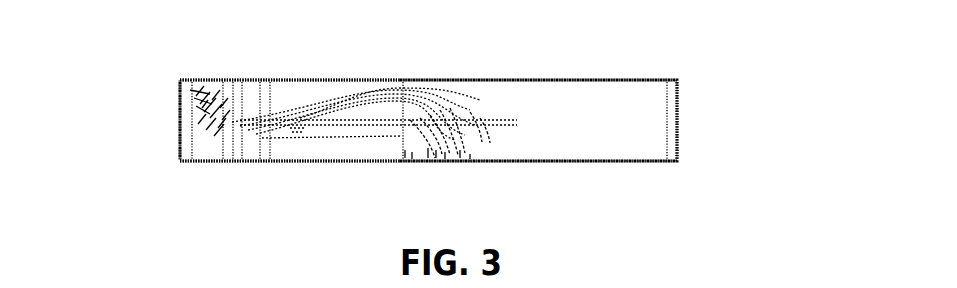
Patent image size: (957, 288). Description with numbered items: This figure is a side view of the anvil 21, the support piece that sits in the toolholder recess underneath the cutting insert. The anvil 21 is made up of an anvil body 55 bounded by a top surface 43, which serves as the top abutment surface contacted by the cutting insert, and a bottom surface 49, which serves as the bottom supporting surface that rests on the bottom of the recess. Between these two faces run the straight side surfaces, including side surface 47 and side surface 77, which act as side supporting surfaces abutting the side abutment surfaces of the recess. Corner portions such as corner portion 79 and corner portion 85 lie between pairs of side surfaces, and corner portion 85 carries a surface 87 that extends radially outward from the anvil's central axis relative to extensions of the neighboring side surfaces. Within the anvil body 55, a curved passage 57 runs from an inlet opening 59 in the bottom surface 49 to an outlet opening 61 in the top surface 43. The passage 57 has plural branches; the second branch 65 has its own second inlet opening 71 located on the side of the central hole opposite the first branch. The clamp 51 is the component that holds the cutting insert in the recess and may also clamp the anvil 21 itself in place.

The anvil 21 is at (735, 51).
The top surface 43 is at (630, 79).
The side surface 47 is at (570, 117).
The bottom surface 49 is at (607, 162).
The clamp 51 is at (498, 112).
The anvil body 55 is at (633, 138).
The curved passage 57 is at (334, 135).
The inlet opening 59 is at (452, 160).
The outlet opening 61 is at (201, 83).
The second branch 65 is at (300, 137).
The second inlet opening 71 is at (437, 163).
The side surface 77 is at (308, 88).
The corner portion 79 is at (677, 104).
The corner portion 85 is at (181, 135).
The surface 87 is at (180, 150).